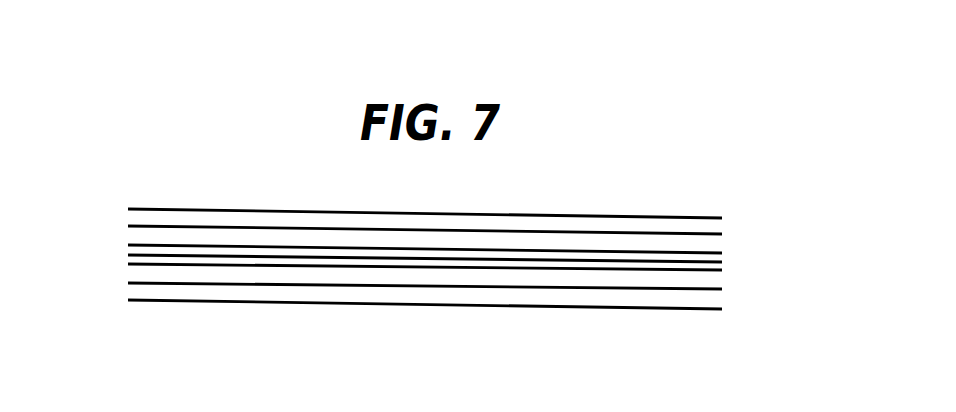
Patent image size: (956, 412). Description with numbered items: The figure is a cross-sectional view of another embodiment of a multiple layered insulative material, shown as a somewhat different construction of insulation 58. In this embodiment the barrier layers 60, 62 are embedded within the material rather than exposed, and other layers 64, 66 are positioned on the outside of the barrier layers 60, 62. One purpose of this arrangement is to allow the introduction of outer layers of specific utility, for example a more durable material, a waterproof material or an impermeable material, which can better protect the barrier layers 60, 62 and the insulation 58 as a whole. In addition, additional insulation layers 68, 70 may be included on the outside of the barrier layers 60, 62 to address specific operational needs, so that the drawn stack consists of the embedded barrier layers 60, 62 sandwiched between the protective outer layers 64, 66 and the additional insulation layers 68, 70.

The insulation 58 is at (573, 203).
The barrier layer 60 is at (722, 253).
The barrier layer 62 is at (722, 270).
The outer layer 64 is at (199, 209).
The outer layer 66 is at (323, 307).
The additional insulation layer 68 is at (128, 226).
The additional insulation layer 70 is at (128, 283).